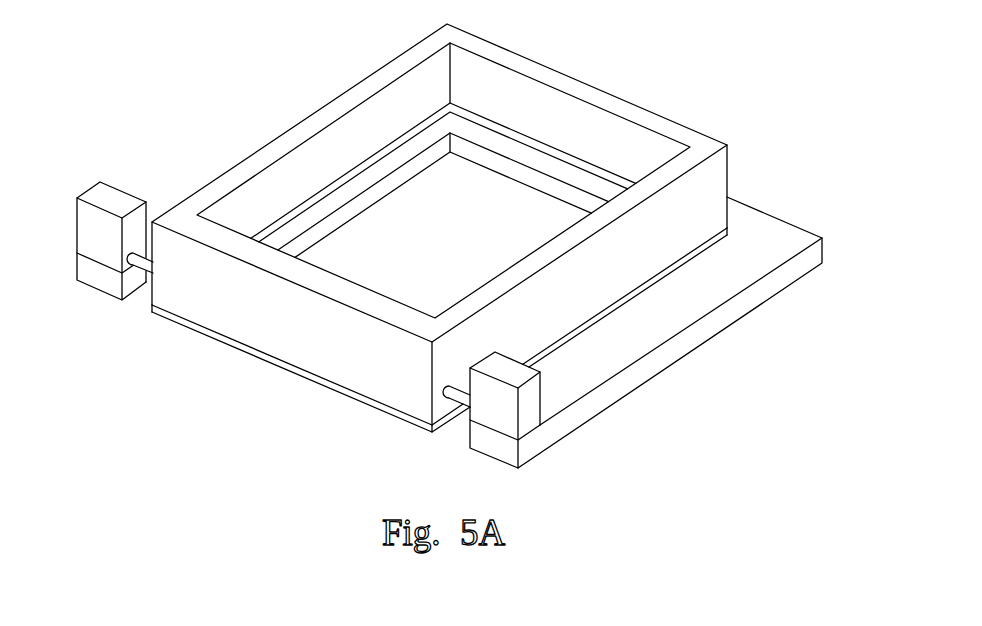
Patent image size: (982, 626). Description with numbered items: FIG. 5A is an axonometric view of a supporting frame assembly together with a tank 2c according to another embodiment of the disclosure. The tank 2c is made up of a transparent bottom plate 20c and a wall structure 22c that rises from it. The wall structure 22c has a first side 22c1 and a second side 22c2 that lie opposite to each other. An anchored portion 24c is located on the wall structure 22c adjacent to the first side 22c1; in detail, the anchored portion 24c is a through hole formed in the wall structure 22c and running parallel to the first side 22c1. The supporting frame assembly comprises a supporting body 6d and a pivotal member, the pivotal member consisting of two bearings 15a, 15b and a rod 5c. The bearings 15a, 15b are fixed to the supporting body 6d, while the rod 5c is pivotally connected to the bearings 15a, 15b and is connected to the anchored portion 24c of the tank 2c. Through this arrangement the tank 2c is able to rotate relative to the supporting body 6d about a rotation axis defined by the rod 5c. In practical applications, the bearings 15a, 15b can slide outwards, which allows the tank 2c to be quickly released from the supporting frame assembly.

The tank 2c is at (507, 222).
The wall structure 22c is at (483, 219).
The second side 22c2 is at (592, 77).
The first side 22c1 is at (287, 335).
The transparent bottom plate 20c is at (727, 230).
The supporting body 6d is at (738, 308).
The bearing 15a is at (112, 184).
The bearing 15b is at (535, 392).
The rod 5c is at (140, 264).
The anchored portion 24c is at (444, 398).